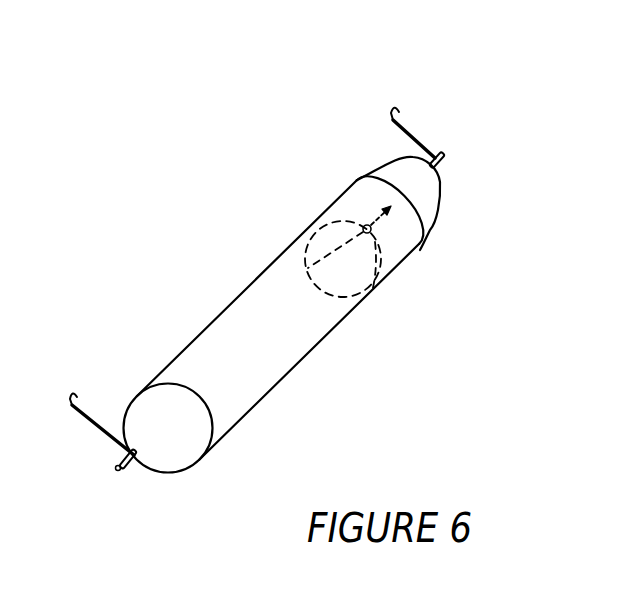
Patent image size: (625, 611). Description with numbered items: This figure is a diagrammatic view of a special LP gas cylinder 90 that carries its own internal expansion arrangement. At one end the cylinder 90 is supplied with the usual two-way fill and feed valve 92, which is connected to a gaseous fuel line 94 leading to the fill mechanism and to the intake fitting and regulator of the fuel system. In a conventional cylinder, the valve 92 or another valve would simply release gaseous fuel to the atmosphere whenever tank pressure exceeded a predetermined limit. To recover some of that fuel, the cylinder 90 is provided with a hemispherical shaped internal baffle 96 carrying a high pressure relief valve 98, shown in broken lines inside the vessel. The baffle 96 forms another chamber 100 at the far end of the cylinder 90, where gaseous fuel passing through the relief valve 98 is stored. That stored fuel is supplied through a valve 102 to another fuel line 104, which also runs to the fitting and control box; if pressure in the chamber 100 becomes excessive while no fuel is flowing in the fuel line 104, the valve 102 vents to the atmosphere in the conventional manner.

The LP gas cylinder 90 is at (209, 269).
The two-way fill and feed valve 92 is at (131, 466).
The gaseous fuel line 94 is at (103, 427).
The hemispherical shaped internal baffle 96 is at (400, 240).
The high pressure relief valve 98 is at (365, 226).
The chamber 100 is at (420, 250).
The valve 102 is at (443, 164).
The fuel line 104 is at (413, 143).